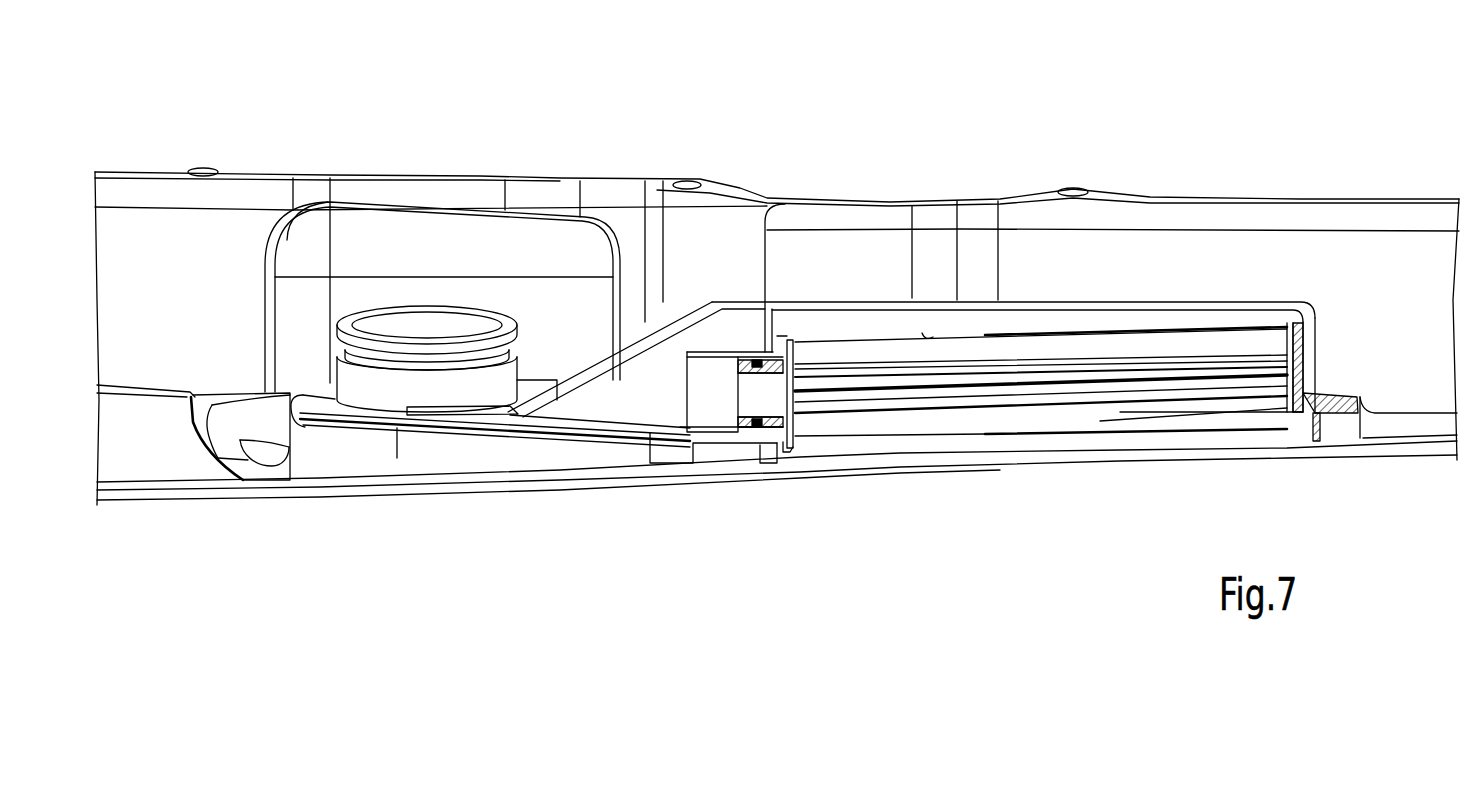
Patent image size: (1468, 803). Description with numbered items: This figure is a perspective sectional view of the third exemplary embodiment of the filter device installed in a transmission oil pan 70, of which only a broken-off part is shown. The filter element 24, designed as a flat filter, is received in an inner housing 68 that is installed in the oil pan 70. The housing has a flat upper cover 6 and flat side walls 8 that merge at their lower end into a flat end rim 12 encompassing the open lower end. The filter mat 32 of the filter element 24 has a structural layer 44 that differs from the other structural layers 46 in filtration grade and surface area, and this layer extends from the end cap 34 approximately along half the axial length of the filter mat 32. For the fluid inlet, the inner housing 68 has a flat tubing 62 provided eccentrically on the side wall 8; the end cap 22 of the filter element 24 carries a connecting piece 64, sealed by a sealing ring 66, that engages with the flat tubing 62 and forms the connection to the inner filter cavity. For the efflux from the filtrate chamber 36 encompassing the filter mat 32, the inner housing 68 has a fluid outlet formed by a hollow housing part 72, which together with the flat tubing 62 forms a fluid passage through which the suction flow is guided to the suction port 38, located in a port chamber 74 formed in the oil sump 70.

The upper cover 6 is at (1057, 300).
The side wall 8 is at (767, 328).
The end rim 12 is at (1343, 397).
The end cap 22 is at (782, 440).
The filter element 24 is at (898, 330).
The filter mat 32 is at (923, 402).
The end cap 34 is at (1292, 372).
The filtrate chamber 36 is at (922, 333).
The suction port 38 is at (480, 358).
The structural layer 44 is at (1127, 330).
The structural layers 46 is at (957, 412).
The flat tubing 62 is at (710, 352).
The connecting piece 64 is at (745, 427).
The sealing ring 66 is at (758, 427).
The inner housing 68 is at (1300, 305).
The transmission oil pan 70 is at (620, 228).
The hollow housing part 72 is at (673, 352).
The port chamber 74 is at (293, 237).